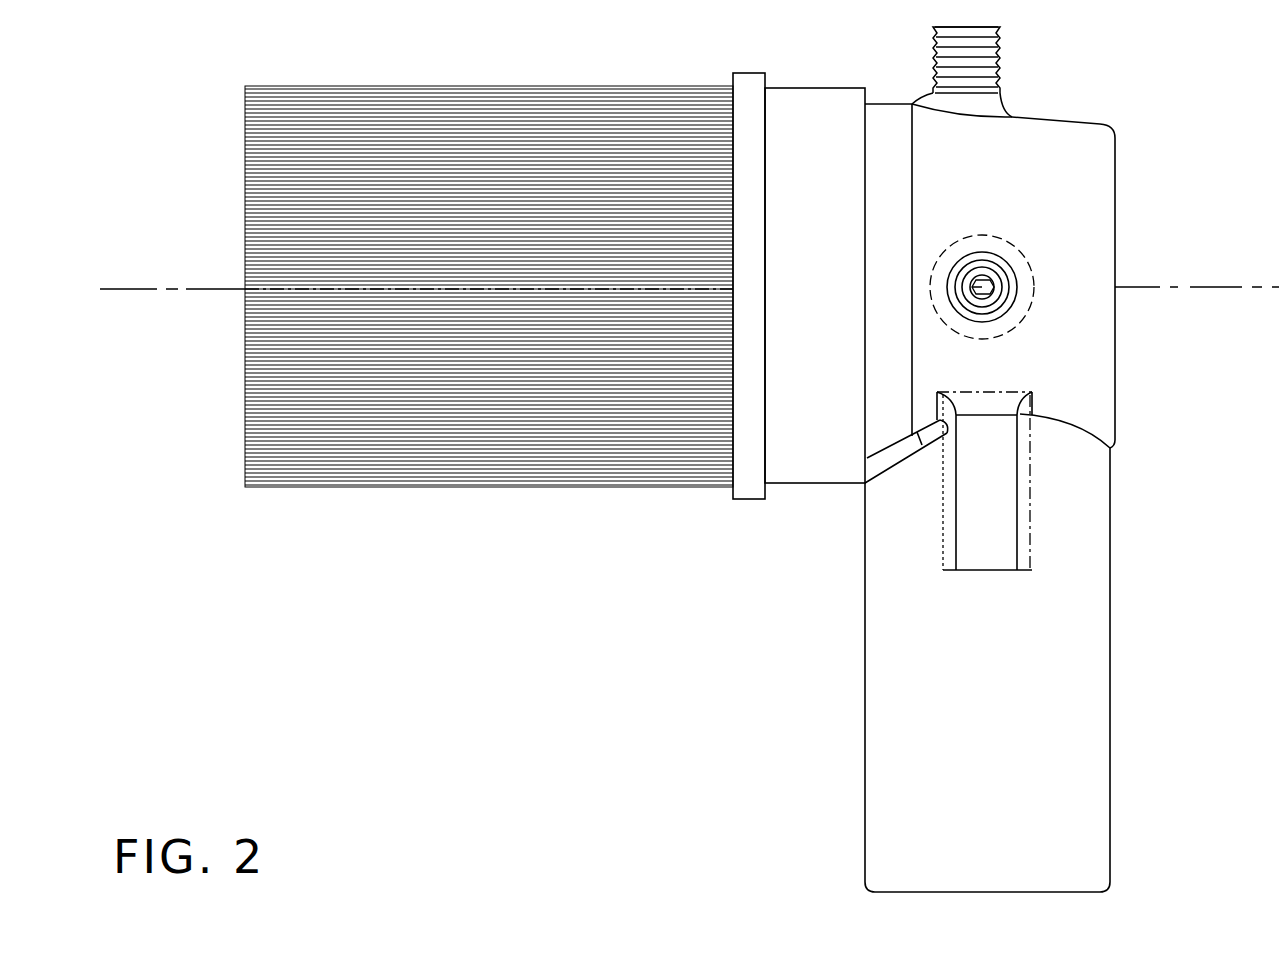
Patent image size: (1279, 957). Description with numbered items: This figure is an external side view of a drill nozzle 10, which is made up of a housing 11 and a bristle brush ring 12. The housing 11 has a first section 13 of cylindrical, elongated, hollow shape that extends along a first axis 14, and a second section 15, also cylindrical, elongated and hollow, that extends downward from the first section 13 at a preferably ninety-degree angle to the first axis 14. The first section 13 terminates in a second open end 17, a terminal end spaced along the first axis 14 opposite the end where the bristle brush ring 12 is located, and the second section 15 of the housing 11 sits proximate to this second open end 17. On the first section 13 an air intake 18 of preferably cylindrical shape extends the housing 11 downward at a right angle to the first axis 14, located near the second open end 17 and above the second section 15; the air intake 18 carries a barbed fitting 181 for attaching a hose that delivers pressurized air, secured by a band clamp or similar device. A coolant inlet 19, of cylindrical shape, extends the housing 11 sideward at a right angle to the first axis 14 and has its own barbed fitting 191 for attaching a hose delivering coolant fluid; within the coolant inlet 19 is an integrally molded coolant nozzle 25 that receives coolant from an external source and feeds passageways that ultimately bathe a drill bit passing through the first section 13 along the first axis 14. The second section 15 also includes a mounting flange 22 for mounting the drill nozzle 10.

The drill nozzle 10 is at (713, 610).
The housing 11 is at (1097, 118).
The bristle brush ring 12 is at (793, 88).
The first section 13 is at (1012, 150).
The first axis 14 is at (1146, 286).
The second section 15 is at (1052, 653).
The second open end 17 is at (1117, 165).
The air intake 18 is at (966, 50).
The barbed fitting 181 is at (1000, 52).
The coolant inlet 19 is at (1000, 262).
The barbed fitting 191 is at (1017, 293).
The mounting flange 22 is at (990, 475).
The coolant nozzle 25 is at (990, 292).